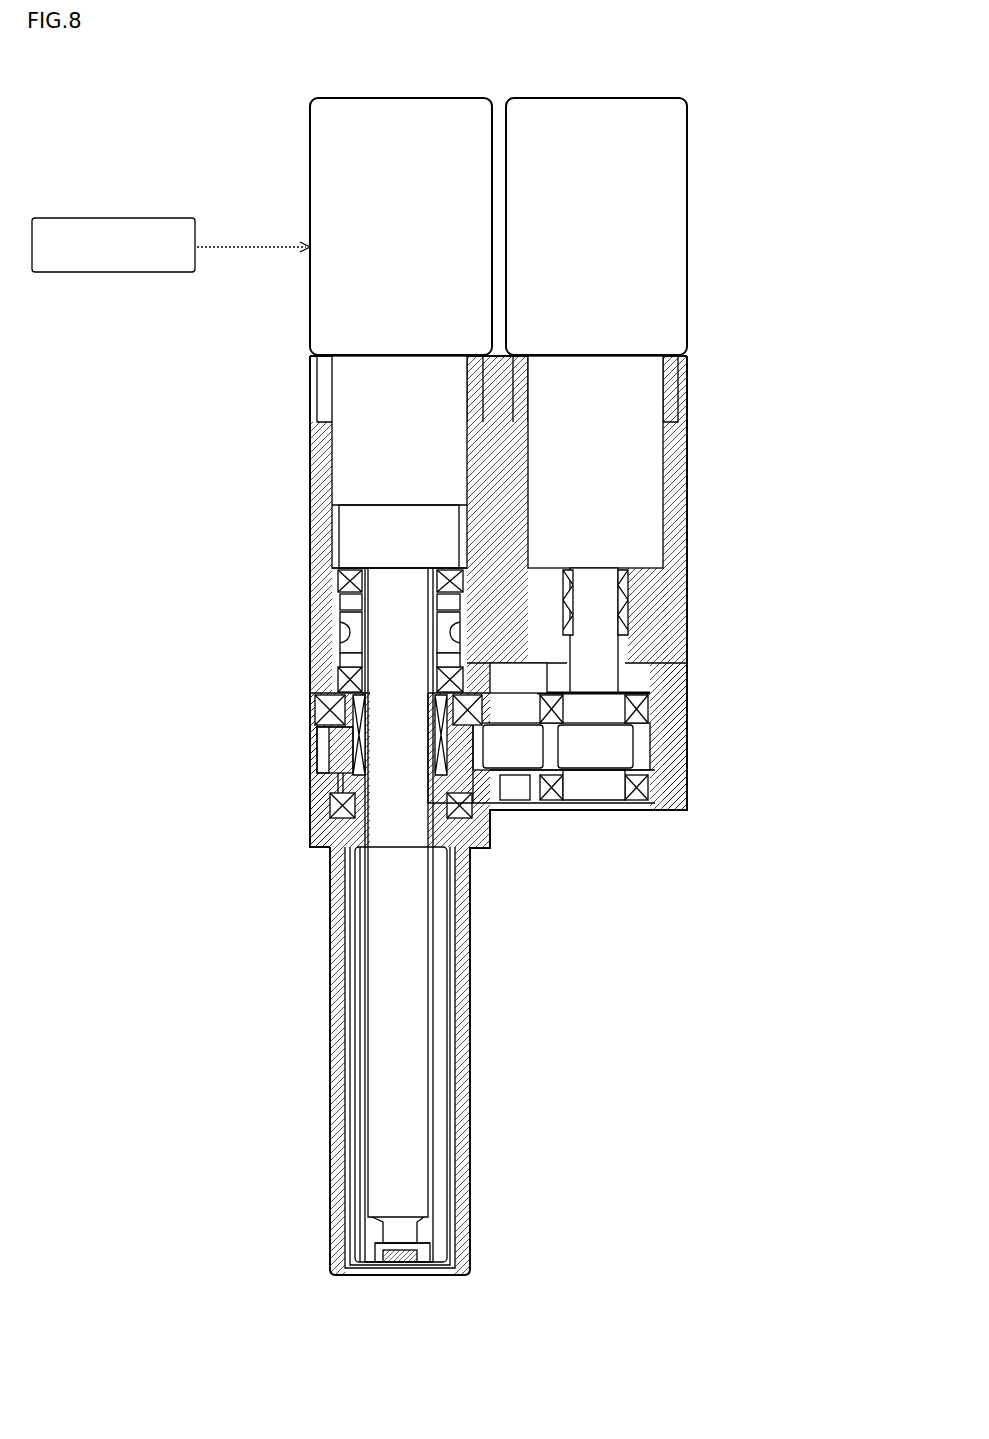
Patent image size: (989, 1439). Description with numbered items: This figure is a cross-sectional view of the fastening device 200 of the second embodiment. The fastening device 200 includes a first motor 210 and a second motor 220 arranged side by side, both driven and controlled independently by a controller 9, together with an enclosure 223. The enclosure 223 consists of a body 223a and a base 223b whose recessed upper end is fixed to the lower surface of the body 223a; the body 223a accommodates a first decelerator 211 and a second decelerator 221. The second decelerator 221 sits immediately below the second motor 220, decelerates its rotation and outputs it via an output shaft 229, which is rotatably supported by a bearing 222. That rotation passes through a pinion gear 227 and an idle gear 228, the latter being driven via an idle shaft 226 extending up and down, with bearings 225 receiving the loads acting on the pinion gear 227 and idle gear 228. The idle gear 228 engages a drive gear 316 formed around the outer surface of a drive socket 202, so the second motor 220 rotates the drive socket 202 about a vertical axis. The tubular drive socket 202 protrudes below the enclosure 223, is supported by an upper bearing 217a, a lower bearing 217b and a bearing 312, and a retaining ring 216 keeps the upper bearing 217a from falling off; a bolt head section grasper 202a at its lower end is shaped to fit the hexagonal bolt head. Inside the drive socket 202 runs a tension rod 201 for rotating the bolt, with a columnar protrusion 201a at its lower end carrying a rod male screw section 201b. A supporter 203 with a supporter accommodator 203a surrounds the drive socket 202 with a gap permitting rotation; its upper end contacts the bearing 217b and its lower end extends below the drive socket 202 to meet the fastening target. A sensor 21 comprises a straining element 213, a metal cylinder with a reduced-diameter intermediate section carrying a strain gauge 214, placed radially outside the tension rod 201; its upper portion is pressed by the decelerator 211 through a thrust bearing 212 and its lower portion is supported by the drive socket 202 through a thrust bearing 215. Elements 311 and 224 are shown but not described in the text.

The fastening device 200 is at (290, 133).
The controller 9 is at (150, 222).
The first motor 210 is at (340, 190).
The second motor 220 is at (680, 188).
The first decelerator 211 is at (340, 440).
The second decelerator 221 is at (653, 447).
The enclosure 223 is at (584, 602).
The body 223a is at (688, 500).
The base 223b is at (688, 725).
The thrust bearing 212 is at (340, 568).
The sensor 21 is at (238, 545).
The straining element 213 is at (345, 600).
The strain gauge 214 is at (350, 615).
The thrust bearing 215 is at (345, 660).
The retaining ring 216 is at (330, 690).
The upper bearing 217a is at (315, 708).
The bearing 312 is at (355, 738).
The sleeve 311 is at (320, 765).
The lower bearing 217b is at (330, 803).
The drive gear 316 is at (490, 805).
The bearing 222 is at (622, 590).
The output shaft 229 is at (608, 646).
The bearing 224 is at (650, 695).
The bearings 225 is at (640, 787).
The idle shaft 226 is at (540, 800).
The pinion gear 227 is at (593, 763).
The idle gear 228 is at (515, 765).
The tension rod 201 is at (408, 970).
The columnar protrusion 201a is at (425, 1253).
The rod male screw section 201b is at (368, 1257).
The drive socket 202 is at (447, 1072).
The bolt head section grasper 202a is at (385, 1258).
The supporter 203 is at (330, 1110).
The supporter accommodator 203a is at (345, 1020).